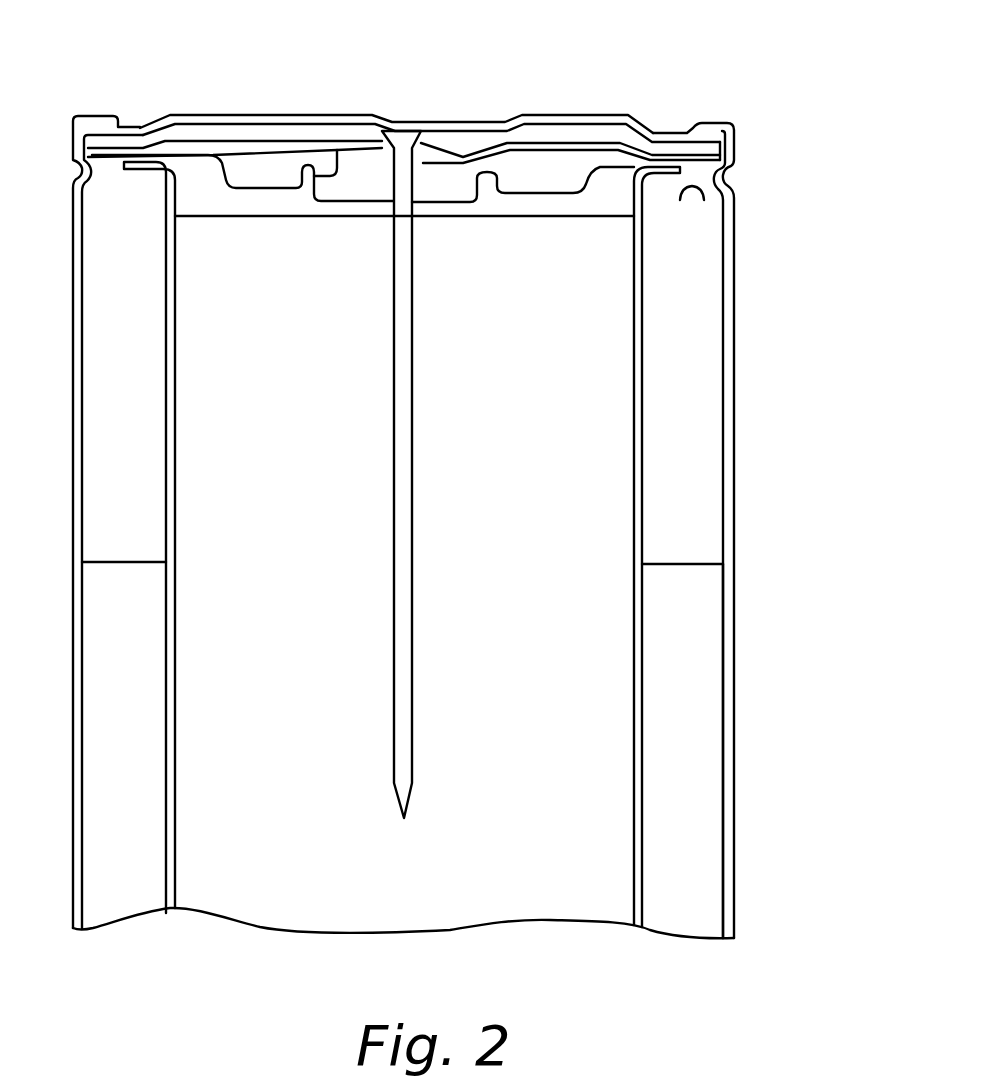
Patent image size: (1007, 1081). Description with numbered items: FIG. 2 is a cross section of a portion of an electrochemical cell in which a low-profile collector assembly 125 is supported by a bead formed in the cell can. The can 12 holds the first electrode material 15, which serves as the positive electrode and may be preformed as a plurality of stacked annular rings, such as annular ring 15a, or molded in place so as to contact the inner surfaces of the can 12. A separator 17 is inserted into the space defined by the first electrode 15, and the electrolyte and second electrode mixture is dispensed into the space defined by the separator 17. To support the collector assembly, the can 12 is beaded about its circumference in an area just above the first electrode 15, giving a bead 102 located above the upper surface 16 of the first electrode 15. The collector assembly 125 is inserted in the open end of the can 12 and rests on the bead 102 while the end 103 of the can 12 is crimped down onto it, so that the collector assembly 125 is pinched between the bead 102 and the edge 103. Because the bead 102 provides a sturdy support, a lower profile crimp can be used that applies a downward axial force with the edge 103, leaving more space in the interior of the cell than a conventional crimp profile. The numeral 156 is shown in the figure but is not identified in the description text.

The can 12 is at (730, 305).
The first electrode material 15 is at (698, 272).
The annular ring 15a is at (692, 433).
The upper surface 16 is at (682, 192).
The separator 17 is at (637, 527).
The bead 102 is at (732, 180).
The end of can 103 is at (705, 118).
The low-profile collector assembly 125 is at (746, 143).
The lower liner section 156 is at (697, 648).